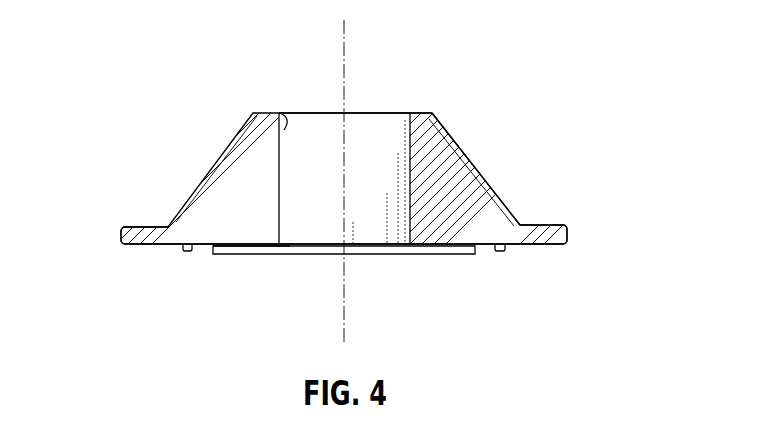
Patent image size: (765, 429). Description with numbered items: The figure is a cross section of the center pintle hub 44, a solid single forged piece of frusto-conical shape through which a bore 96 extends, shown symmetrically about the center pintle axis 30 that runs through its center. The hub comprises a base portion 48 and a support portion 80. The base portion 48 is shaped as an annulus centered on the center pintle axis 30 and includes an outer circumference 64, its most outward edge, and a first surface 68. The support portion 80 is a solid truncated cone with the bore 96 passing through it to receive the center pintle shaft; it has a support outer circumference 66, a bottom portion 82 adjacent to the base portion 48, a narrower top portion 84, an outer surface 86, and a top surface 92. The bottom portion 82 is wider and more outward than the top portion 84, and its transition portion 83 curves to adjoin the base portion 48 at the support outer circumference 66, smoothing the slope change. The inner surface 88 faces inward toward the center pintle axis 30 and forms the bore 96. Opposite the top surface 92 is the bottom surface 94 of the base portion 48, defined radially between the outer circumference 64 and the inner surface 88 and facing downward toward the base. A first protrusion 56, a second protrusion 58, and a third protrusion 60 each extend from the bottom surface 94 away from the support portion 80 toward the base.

The center pintle hub 44 is at (183, 70).
The center pintle axis 30 is at (343, 48).
The inner surface 88 is at (283, 113).
The bore 96 is at (377, 113).
The top surface 92 is at (424, 112).
The top portion 84 is at (434, 117).
The outer surface 86 is at (462, 145).
The support portion 80 is at (462, 180).
The bottom portion 82 is at (504, 208).
The transition portion 83 is at (520, 225).
The outer circumference 64 is at (570, 237).
The support outer circumference 66 is at (532, 228).
The base portion 48 is at (557, 245).
The third protrusion 60 is at (500, 253).
The first protrusion 56 is at (188, 252).
The second protrusion 58 is at (313, 253).
The bottom surface 94 is at (252, 250).
The first surface 68 is at (152, 226).